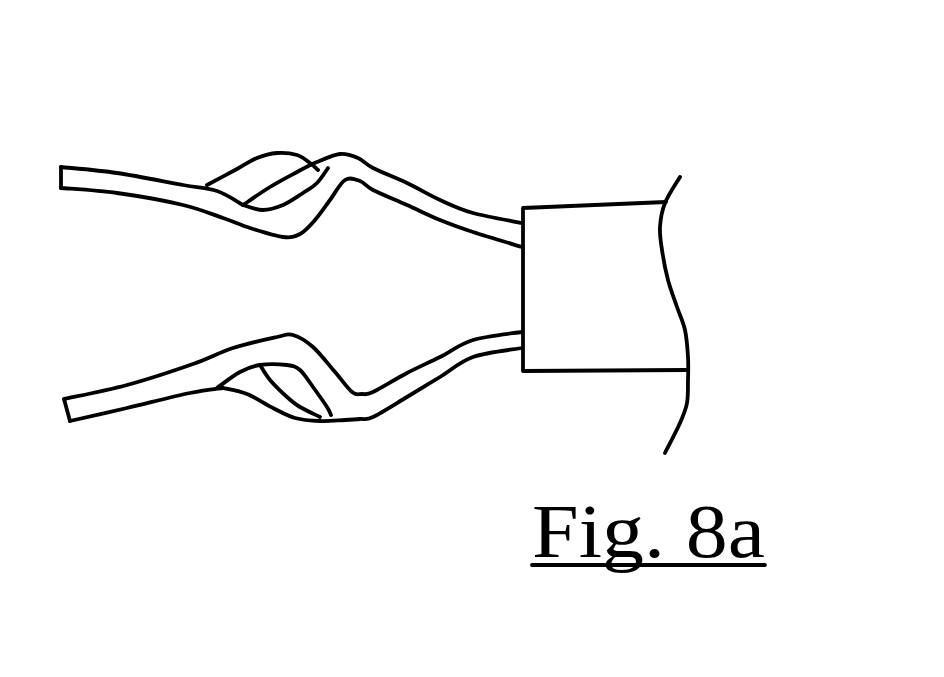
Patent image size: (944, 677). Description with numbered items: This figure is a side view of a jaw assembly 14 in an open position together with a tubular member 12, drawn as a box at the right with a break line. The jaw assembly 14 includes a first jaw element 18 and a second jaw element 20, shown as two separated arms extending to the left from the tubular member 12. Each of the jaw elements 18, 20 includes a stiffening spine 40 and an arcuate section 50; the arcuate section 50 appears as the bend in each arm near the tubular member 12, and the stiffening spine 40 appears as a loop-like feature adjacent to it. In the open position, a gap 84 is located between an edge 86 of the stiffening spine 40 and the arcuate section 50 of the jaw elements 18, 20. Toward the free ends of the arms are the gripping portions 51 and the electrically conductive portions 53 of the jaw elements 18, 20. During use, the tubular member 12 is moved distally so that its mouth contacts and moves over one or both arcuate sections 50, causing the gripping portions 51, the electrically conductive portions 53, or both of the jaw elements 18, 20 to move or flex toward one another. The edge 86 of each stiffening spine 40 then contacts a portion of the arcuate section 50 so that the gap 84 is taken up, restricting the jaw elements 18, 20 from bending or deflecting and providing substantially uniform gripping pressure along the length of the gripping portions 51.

The tubular member 12 is at (597, 343).
The jaw assembly 14 is at (153, 120).
The first jaw element 18 is at (87, 168).
The second jaw element 20 is at (93, 417).
The stiffening spine 40 is at (242, 178).
The arcuate section 50 is at (345, 153).
The gripping portion 51 is at (99, 196).
The electrically conductive portion 53 is at (160, 207).
The gap 84 is at (315, 165).
The edge 86 is at (307, 168).